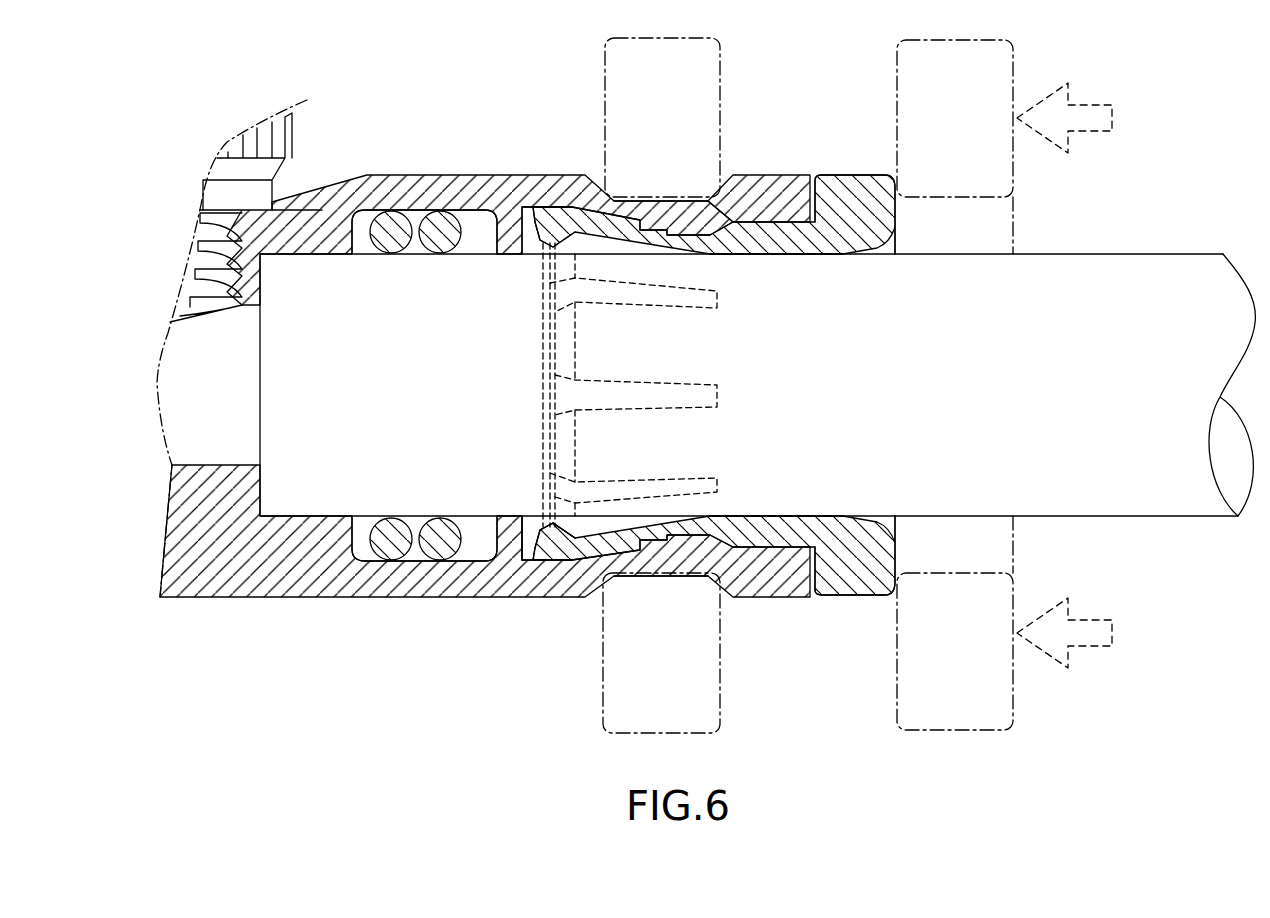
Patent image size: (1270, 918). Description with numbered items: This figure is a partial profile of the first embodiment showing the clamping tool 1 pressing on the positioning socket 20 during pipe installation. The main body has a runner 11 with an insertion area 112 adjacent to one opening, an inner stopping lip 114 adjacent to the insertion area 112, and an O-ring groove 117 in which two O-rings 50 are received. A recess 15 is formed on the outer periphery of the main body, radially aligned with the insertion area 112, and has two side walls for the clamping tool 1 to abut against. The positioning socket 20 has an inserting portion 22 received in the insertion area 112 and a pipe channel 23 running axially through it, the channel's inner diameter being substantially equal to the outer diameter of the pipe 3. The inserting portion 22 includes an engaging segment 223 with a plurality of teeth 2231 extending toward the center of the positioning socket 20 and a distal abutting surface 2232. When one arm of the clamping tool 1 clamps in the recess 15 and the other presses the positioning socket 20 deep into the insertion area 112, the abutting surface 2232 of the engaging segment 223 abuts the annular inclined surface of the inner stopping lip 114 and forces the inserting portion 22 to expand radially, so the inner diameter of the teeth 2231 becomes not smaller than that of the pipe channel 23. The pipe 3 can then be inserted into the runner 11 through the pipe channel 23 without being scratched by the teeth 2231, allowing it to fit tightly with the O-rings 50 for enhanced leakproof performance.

The clamping tool 1 is at (700, 58).
The pipe 3 is at (1155, 282).
The runner 11 is at (214, 386).
The recess 15 is at (673, 201).
The positioning socket 20 is at (853, 192).
The inserting portion 22 is at (618, 533).
The pipe channel 23 is at (762, 254).
The O-rings 50 is at (443, 232).
The insertion area 112 is at (700, 535).
The inner stopping lip 114 is at (518, 242).
The O-ring groove 117 is at (415, 238).
The engaging segment 223 is at (555, 556).
The teeth 2231 is at (556, 248).
The abutting surface 2232 is at (533, 543).